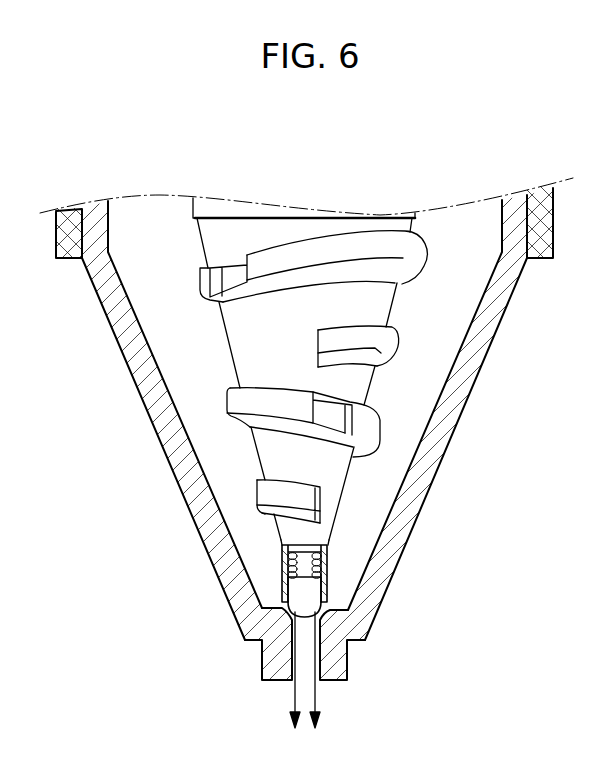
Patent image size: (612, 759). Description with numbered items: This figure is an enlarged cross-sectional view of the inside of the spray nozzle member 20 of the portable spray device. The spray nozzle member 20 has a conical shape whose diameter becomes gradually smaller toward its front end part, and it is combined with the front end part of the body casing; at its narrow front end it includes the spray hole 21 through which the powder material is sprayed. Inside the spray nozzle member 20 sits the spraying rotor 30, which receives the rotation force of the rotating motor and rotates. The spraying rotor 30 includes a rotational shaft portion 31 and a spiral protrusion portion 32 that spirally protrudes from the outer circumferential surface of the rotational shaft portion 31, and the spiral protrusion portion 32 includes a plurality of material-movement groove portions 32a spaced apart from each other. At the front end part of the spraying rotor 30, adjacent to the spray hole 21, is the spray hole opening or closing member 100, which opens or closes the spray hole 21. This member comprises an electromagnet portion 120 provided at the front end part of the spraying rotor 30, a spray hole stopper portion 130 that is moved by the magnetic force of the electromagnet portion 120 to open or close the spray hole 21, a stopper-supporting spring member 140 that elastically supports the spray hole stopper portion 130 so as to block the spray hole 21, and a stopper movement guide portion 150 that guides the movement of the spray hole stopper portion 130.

The spray nozzle member 20 is at (177, 467).
The spray hole 21 is at (305, 663).
The spraying rotor 30 is at (314, 339).
The rotational shaft portion 31 is at (380, 305).
The spiral protrusion portion 32 is at (347, 245).
The material-movement groove portion 32a is at (235, 277).
The spray hole opening or closing member 100 is at (405, 592).
The electromagnet portion 120 is at (320, 547).
The stopper-supporting spring member 140 is at (323, 570).
The stopper movement guide portion 150 is at (323, 588).
The spray hole stopper portion 130 is at (317, 607).